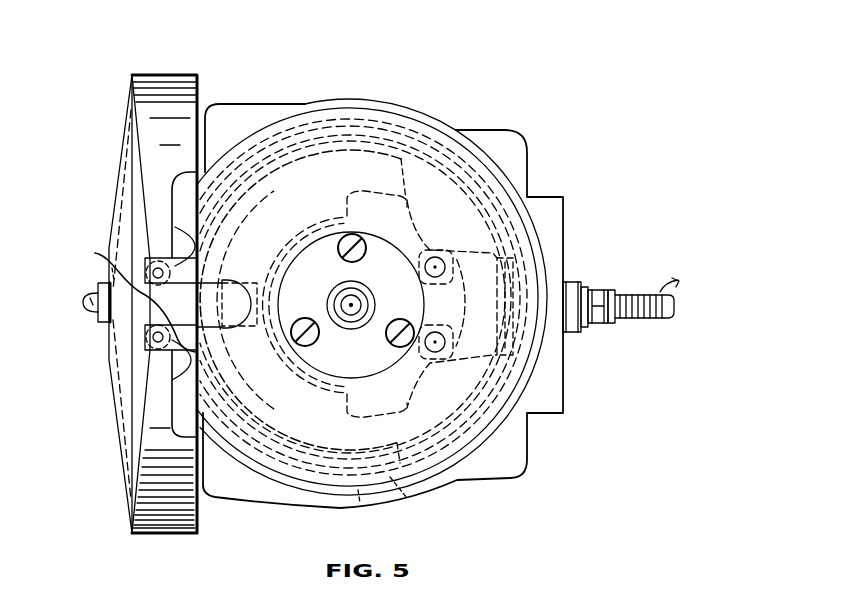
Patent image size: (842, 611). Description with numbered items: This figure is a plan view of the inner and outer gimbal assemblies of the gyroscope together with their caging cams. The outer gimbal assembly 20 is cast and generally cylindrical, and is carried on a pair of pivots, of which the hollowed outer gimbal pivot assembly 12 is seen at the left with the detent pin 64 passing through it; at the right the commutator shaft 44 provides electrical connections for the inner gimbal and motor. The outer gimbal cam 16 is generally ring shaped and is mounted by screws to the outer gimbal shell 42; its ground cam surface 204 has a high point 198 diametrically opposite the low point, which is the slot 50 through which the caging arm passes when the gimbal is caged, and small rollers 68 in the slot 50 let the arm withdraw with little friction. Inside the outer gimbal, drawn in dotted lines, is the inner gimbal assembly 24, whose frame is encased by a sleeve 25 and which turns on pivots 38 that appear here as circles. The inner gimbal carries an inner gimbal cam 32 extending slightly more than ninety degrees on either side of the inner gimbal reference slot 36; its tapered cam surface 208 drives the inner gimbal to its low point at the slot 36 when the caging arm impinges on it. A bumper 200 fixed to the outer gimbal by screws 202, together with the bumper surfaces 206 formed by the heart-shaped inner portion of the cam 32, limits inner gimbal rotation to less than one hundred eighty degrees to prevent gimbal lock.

The outer gimbal pivot assembly 12 is at (103, 322).
The outer gimbal cam 16 is at (188, 94).
The outer gimbal assembly 20 is at (482, 470).
The inner gimbal assembly 24 is at (407, 498).
The sleeve 25 is at (360, 503).
The inner gimbal cam 32 is at (262, 223).
The inner gimbal reference slot 36 is at (231, 283).
The pivots 38 is at (357, 306).
The outer gimbal shell 42 is at (443, 140).
The commutator shaft 44 is at (592, 292).
The slot 50 is at (186, 326).
The detent pin 64 is at (90, 312).
The rollers 68 is at (130, 298).
The high point 198 is at (112, 273).
The bumper 200 is at (443, 363).
The screws 202 is at (437, 257).
The cam surface 204 is at (131, 98).
The bumper surfaces 206 is at (362, 207).
The cam surface 208 is at (328, 454).